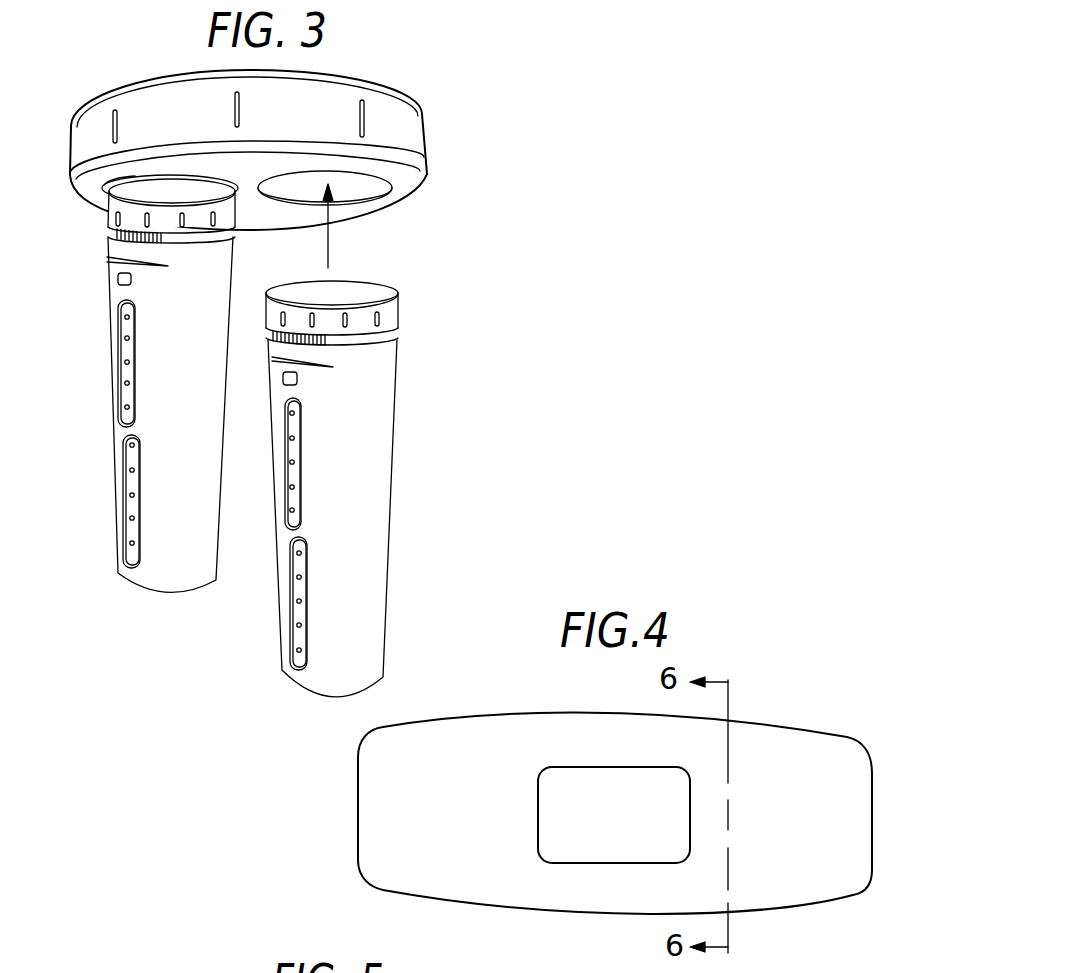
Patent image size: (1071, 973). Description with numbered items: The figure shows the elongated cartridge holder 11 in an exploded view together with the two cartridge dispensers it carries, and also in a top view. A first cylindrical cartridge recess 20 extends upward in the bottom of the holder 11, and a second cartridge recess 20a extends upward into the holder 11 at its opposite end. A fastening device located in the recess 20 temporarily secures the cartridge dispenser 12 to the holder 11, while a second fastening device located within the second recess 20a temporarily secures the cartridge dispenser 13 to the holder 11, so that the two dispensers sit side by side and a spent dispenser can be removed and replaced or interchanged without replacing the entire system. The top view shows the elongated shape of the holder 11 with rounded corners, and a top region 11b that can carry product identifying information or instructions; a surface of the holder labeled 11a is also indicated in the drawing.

In FIG. 3, the cartridge holder 11 is at (400, 127).
In FIG. 4, the cartridge holder 11 is at (782, 723).
In FIG. 3, the bottom surface of cover 11a is at (413, 200).
In FIG. 4, the top region 11b is at (603, 863).
In FIG. 3, the cartridge dispenser 12 is at (353, 520).
In FIG. 3, the cartridge dispenser 13 is at (110, 410).
In FIG. 3, the first cylindrical cartridge recess 20 is at (372, 192).
In FIG. 3, the second cartridge recess 20a is at (110, 191).